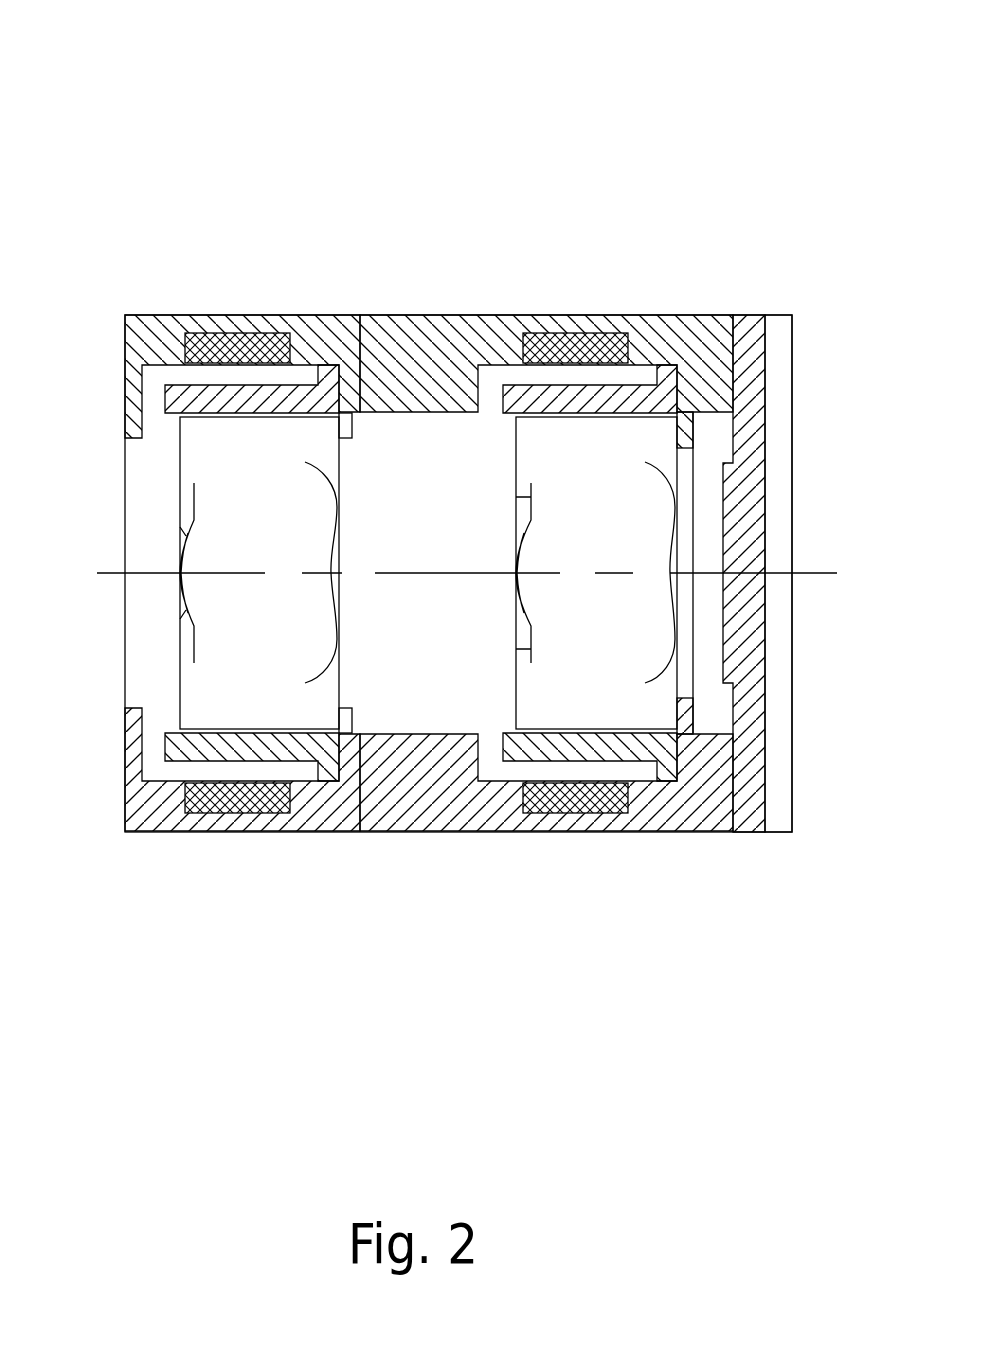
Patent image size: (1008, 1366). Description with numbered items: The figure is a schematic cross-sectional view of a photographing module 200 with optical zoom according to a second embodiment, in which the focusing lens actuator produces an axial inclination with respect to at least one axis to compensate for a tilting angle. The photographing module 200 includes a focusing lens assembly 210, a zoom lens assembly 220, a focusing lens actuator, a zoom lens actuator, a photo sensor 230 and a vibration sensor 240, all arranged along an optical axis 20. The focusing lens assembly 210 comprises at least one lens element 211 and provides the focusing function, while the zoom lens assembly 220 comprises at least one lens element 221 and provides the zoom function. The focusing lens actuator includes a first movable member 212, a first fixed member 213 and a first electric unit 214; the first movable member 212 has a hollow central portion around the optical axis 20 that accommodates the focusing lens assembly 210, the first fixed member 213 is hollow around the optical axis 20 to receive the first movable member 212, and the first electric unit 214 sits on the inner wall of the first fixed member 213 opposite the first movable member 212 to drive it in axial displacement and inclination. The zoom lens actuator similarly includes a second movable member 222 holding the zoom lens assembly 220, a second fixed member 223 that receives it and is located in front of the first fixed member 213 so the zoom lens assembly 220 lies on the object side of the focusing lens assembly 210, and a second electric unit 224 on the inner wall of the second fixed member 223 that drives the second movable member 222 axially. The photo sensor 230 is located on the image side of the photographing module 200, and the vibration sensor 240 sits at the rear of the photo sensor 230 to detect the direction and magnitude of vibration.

The photographing module with optical zoom 200 is at (868, 33).
The optical axis 20 is at (485, 573).
The focusing lens assembly 210 is at (550, 468).
The lens element 211 is at (520, 557).
The first movable member 212 is at (567, 397).
The first fixed member 213 is at (487, 322).
The first electric unit 214 is at (545, 335).
The zoom lens assembly 220 is at (213, 468).
The lens element 221 is at (182, 557).
The second movable member 222 is at (228, 392).
The second fixed member 223 is at (147, 322).
The second electric unit 224 is at (208, 335).
The photo sensor 230 is at (723, 505).
The vibration sensor 240 is at (777, 360).